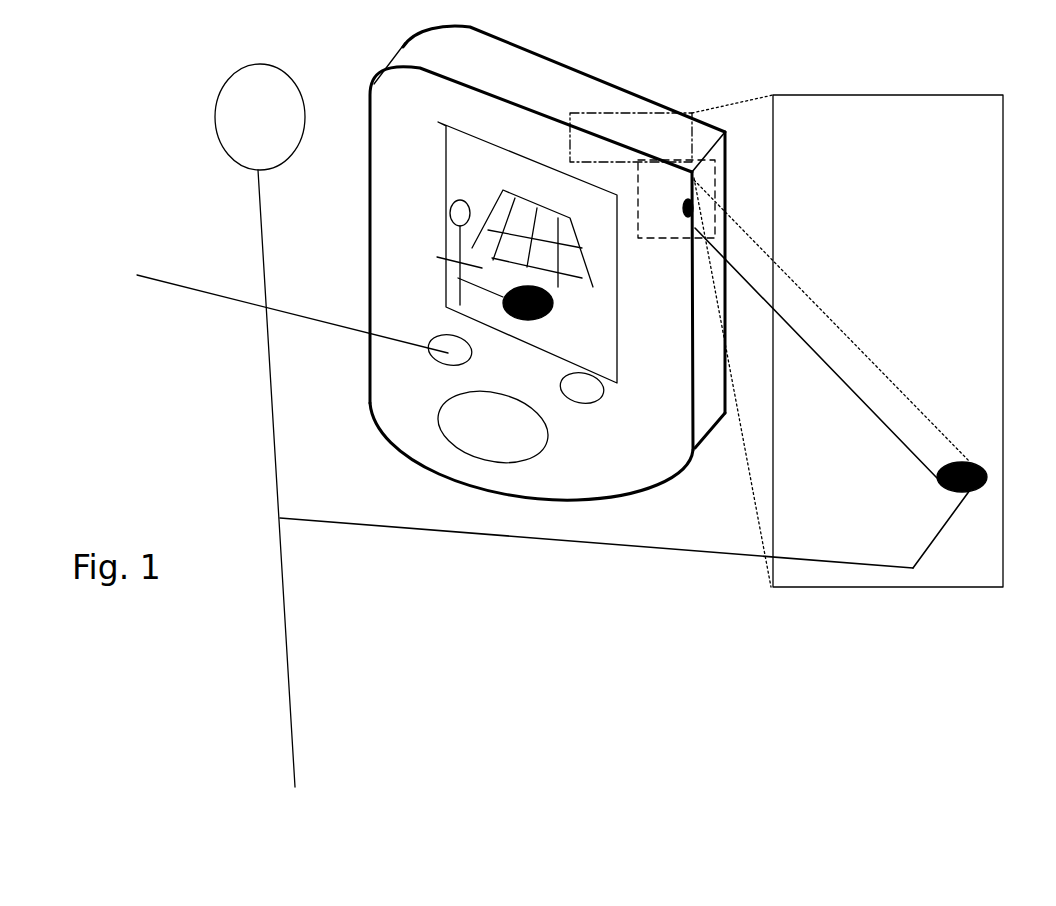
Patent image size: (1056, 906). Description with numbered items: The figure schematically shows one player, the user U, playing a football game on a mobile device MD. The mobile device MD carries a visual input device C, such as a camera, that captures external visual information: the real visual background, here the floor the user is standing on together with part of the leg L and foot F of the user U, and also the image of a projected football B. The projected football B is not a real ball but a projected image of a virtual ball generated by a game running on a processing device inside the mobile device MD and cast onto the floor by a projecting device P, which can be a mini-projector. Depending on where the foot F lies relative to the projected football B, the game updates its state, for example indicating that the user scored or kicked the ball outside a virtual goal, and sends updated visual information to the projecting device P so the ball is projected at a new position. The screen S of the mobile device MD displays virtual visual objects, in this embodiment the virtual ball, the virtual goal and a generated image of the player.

The mobile device MD is at (583, 41).
The screen S is at (527, 252).
The visual input device C is at (631, 139).
The projecting device P is at (787, 319).
The projected football B is at (980, 452).
The leg L is at (820, 544).
The foot F is at (914, 538).
The user U is at (260, 720).